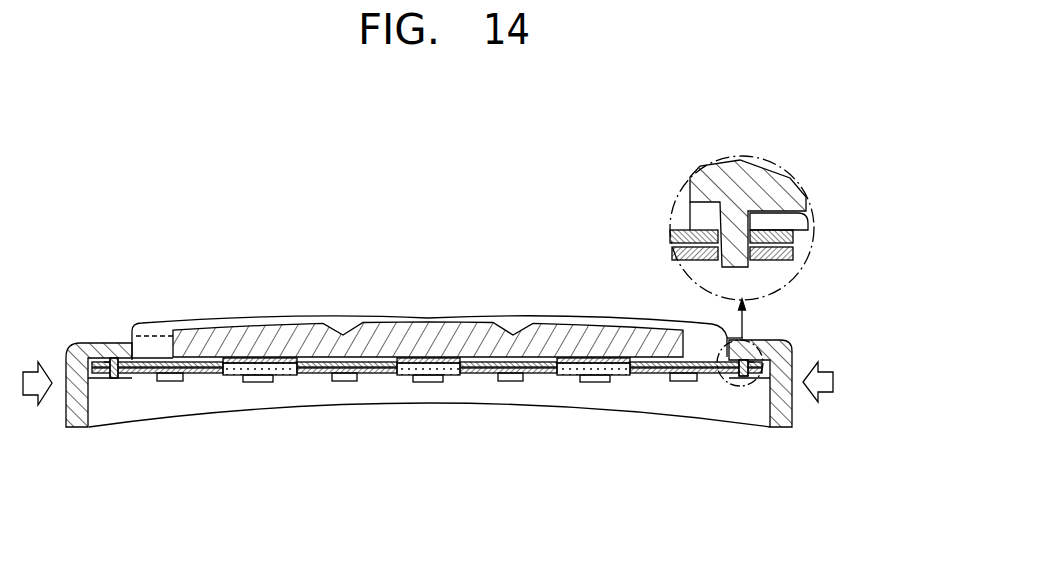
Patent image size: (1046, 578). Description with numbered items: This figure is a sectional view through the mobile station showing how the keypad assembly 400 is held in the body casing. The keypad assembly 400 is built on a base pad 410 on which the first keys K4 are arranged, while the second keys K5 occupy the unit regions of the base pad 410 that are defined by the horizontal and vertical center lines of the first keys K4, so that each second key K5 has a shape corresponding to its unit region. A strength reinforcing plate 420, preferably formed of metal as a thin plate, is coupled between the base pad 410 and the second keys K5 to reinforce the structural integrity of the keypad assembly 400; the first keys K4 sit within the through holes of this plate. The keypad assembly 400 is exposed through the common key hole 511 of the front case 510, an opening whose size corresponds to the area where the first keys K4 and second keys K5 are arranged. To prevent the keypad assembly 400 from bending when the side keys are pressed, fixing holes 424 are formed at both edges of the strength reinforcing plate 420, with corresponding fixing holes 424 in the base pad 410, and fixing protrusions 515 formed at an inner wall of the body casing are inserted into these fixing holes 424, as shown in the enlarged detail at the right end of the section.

The keypad assembly 400 is at (556, 306).
The base pad 410 is at (147, 374).
The strength reinforcing plate 420 is at (155, 363).
The fixing hole 424 is at (107, 360).
The front case 510 is at (801, 349).
The common key hole 511 is at (138, 330).
The fixing protrusion 515 is at (112, 374).
The first key K4 is at (343, 333).
The second key K5 is at (417, 333).